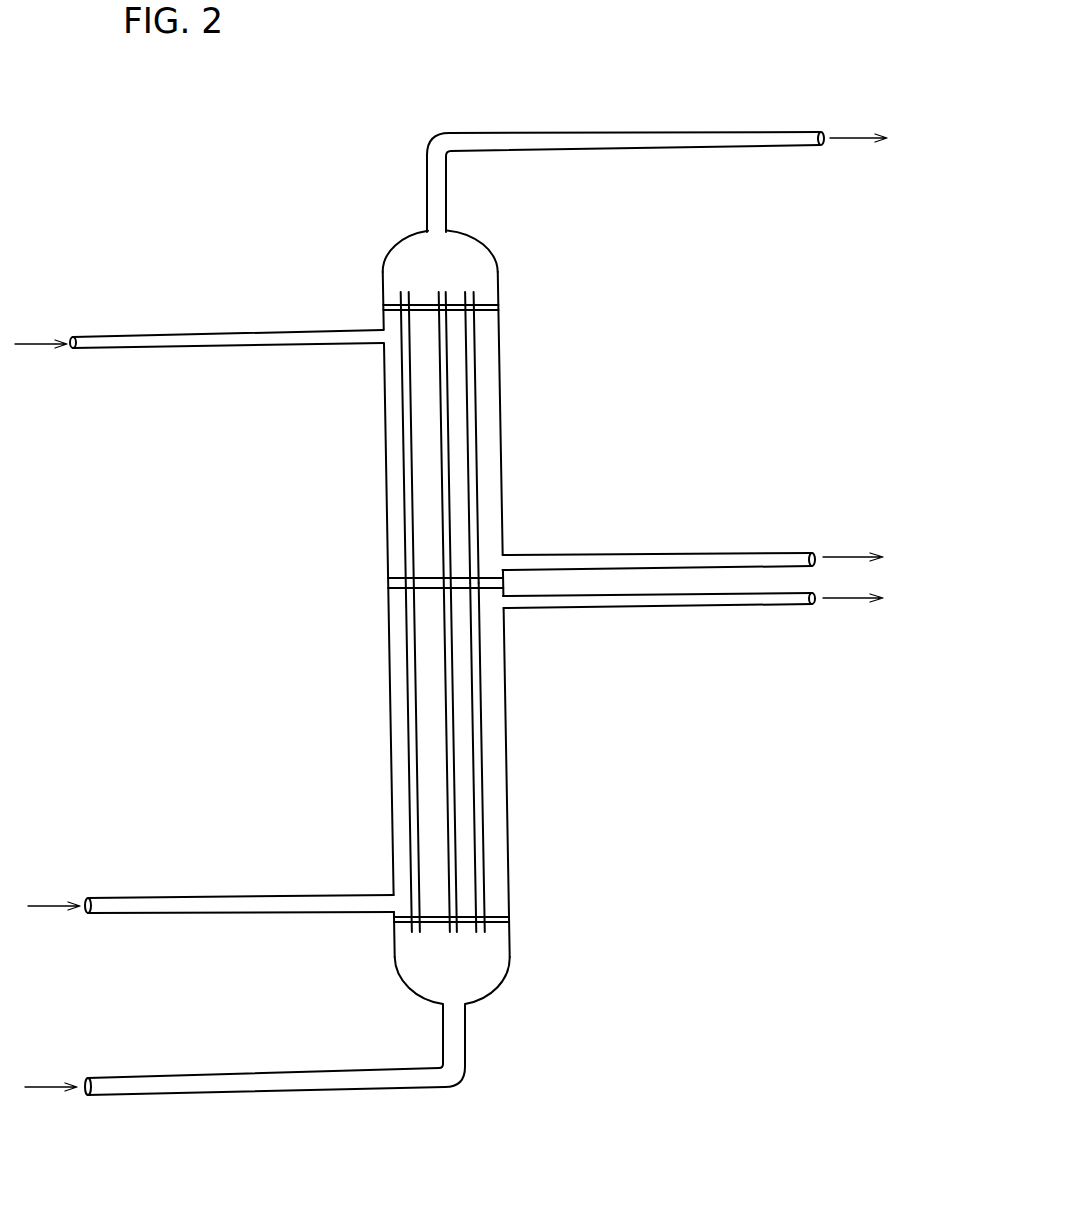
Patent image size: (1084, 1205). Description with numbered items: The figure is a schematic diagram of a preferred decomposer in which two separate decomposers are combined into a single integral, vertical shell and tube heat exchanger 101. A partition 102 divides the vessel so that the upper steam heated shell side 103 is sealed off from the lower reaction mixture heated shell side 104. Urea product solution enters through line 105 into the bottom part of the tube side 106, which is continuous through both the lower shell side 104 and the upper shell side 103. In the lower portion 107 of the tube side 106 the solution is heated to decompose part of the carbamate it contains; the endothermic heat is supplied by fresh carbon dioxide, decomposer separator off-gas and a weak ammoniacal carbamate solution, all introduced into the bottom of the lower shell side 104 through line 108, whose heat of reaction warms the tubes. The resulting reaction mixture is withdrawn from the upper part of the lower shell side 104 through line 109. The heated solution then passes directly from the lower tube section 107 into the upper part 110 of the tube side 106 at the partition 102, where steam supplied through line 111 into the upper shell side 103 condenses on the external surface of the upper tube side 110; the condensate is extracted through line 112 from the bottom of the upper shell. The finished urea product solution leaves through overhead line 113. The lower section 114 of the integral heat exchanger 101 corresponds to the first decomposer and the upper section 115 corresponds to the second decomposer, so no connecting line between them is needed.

The integral vertical shell and tube heat exchanger 101 is at (383, 452).
The partition 102 is at (428, 588).
The upper steam heated shell side 103 is at (488, 398).
The lower reaction mixture heated shell side 104 is at (495, 852).
The line 105 is at (268, 1090).
The tube side 106 is at (478, 933).
The lower portion of tube side 107 is at (483, 767).
The line 108 is at (162, 898).
The line 109 is at (693, 622).
The upper part of tube side 110 is at (477, 493).
The line 111 is at (215, 331).
The line 112 is at (597, 556).
The overhead line 113 is at (608, 131).
The lower section of integral heat exchanger 114 is at (495, 652).
The upper section of integral heat exchanger 115 is at (477, 268).